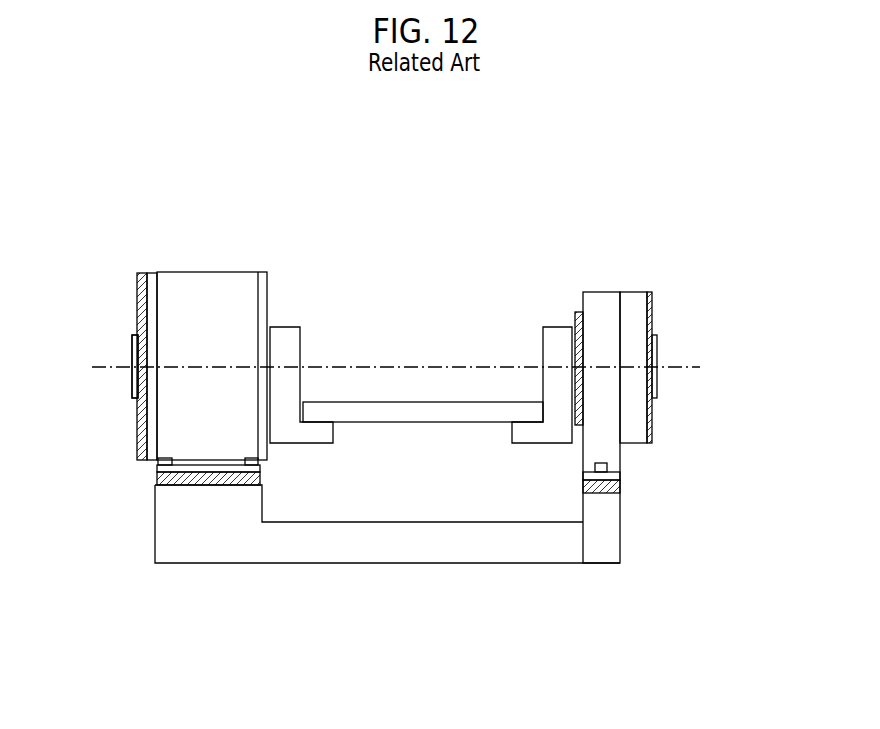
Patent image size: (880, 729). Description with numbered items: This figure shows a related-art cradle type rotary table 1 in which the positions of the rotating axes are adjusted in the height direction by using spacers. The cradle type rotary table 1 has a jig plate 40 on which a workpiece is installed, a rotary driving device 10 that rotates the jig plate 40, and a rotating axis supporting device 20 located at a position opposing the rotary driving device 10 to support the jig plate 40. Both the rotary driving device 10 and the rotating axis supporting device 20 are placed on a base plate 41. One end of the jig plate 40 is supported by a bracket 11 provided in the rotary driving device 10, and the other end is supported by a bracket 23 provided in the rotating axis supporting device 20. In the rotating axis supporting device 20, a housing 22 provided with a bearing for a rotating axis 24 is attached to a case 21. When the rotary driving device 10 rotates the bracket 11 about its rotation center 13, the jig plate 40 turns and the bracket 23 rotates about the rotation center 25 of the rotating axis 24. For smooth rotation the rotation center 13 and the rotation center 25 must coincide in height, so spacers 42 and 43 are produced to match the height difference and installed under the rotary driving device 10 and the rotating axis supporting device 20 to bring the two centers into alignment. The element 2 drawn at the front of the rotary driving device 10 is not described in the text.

The cradle type rotary table 1 is at (90, 222).
The lens 2 is at (132, 342).
The rotary driving device 10 is at (178, 298).
The bracket 11 is at (285, 340).
The rotation center 13 is at (122, 368).
The rotating axis supporting device 20 is at (673, 283).
The case 21 is at (603, 452).
The housing 22 is at (637, 423).
The bracket 23 is at (550, 347).
The rotating axis 24 is at (653, 337).
The rotation center 25 is at (670, 367).
The jig plate 40 is at (418, 412).
The base plate 41 is at (185, 563).
The spacer 42 is at (260, 480).
The spacer 43 is at (602, 493).